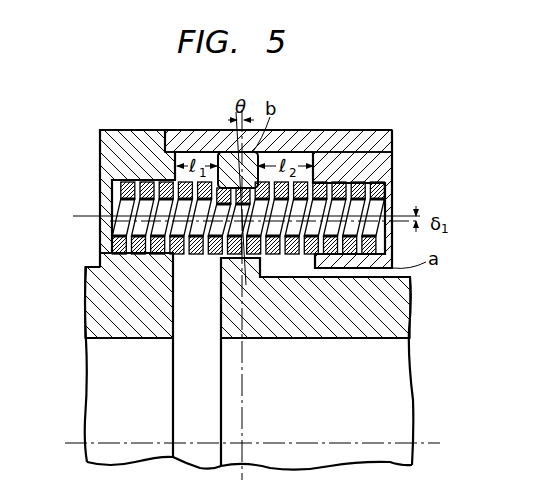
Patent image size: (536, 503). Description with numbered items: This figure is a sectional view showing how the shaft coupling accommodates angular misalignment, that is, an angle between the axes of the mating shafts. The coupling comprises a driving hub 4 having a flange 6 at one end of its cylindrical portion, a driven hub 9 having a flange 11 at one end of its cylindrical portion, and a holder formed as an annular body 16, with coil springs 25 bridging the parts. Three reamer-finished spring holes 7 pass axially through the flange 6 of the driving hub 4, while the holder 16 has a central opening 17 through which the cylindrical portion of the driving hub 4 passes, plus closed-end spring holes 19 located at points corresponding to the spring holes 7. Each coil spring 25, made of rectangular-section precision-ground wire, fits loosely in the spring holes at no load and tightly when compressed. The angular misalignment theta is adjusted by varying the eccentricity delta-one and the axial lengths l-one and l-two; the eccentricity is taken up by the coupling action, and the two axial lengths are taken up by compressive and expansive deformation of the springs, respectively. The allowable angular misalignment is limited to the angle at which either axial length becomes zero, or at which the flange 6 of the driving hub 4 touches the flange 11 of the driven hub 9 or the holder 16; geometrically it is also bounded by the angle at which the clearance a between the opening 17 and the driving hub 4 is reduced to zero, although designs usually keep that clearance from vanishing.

The driving hub 4 is at (393, 312).
The flange 6 is at (246, 166).
The spring holes 7 is at (232, 173).
The driven hub 9 is at (86, 284).
The flange 11 is at (110, 153).
The annular body 16 is at (384, 150).
The central opening 17 is at (337, 292).
The closed-end spring holes 19 is at (337, 182).
The coil springs 25 is at (327, 182).